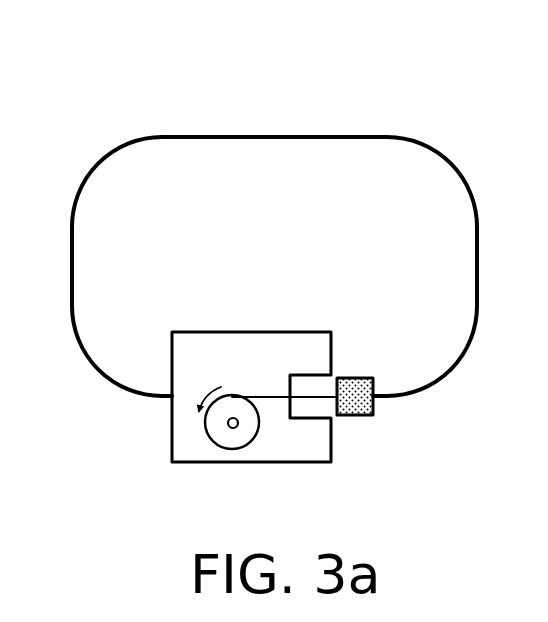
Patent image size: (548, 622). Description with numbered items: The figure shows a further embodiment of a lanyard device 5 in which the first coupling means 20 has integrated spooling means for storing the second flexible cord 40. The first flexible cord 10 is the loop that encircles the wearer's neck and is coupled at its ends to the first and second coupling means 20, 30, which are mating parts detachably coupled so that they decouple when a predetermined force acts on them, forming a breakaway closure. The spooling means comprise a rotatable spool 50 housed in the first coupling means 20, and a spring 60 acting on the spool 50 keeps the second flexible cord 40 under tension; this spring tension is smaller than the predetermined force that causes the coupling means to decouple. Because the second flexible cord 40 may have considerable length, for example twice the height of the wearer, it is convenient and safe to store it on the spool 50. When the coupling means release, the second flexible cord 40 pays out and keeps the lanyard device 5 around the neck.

The lanyard device 5 is at (66, 86).
The first flexible cord 10 is at (274, 136).
The first coupling means 20 is at (250, 331).
The second coupling means 30 is at (355, 378).
The second flexible cord 40 is at (262, 397).
The spool 50 is at (209, 441).
The spring 60 is at (237, 427).